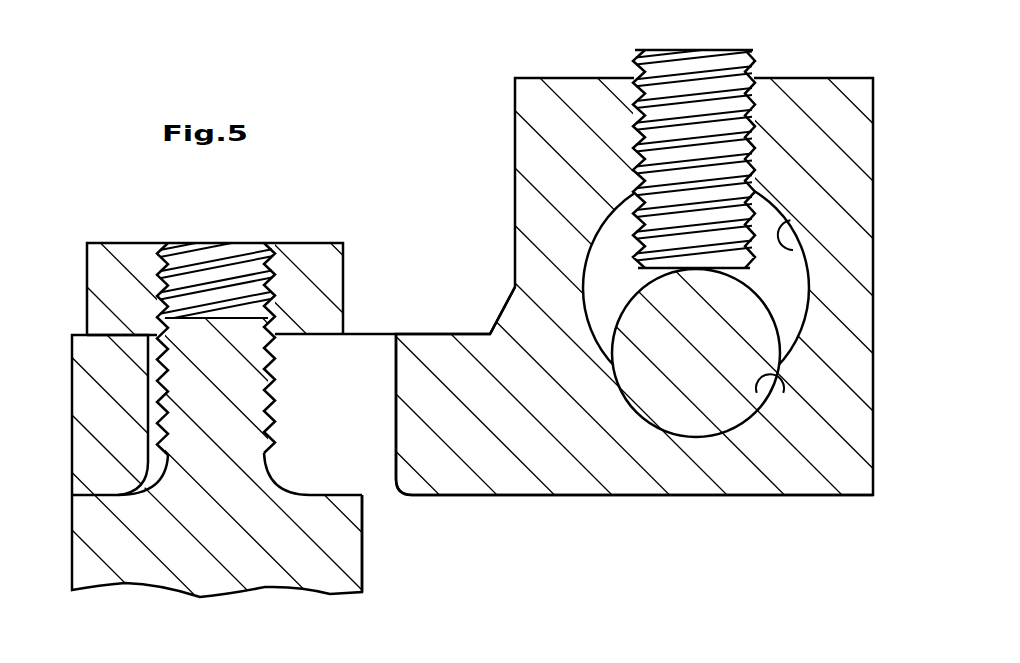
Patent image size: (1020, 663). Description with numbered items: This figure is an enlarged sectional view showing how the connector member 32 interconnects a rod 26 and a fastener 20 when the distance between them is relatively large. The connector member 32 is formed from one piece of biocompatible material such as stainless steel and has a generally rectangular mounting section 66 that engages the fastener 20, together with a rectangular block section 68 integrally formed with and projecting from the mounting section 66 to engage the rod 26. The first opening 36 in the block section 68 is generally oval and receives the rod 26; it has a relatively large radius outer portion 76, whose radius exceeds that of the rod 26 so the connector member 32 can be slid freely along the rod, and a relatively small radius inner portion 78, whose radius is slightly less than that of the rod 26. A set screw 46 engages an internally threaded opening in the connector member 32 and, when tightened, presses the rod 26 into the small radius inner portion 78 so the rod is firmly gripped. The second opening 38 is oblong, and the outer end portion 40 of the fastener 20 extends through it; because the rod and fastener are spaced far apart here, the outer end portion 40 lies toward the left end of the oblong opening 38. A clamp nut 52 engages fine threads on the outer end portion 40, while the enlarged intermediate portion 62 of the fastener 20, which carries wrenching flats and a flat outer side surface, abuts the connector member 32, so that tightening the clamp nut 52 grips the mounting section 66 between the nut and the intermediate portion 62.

The fastener 20 is at (117, 597).
The rod 26 is at (745, 328).
The connector member 32 is at (838, 504).
The first opening 36 is at (817, 272).
The second opening 38 is at (377, 474).
The outer end portion 40 is at (247, 398).
The set screw 46 is at (737, 63).
The clamp nut 52 is at (315, 283).
The enlarged intermediate portion 62 is at (340, 547).
The mounting section 66 is at (95, 395).
The block section 68 is at (552, 117).
The large radius outer portion 76 is at (783, 217).
The small radius inner portion 78 is at (783, 380).